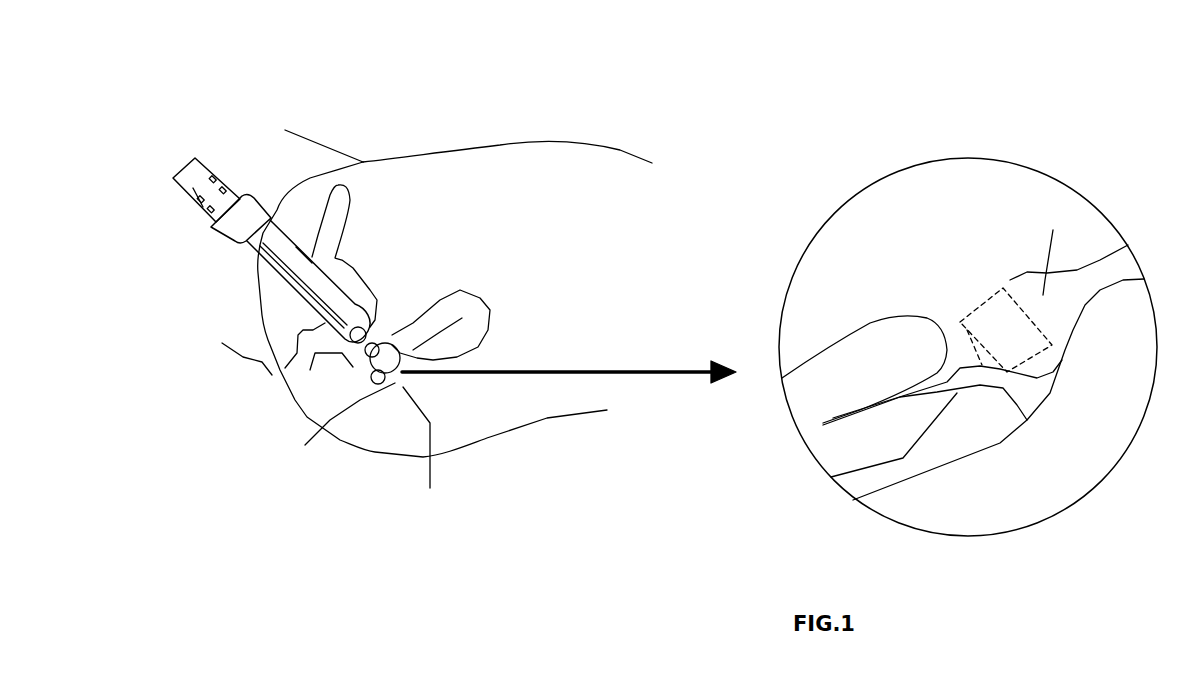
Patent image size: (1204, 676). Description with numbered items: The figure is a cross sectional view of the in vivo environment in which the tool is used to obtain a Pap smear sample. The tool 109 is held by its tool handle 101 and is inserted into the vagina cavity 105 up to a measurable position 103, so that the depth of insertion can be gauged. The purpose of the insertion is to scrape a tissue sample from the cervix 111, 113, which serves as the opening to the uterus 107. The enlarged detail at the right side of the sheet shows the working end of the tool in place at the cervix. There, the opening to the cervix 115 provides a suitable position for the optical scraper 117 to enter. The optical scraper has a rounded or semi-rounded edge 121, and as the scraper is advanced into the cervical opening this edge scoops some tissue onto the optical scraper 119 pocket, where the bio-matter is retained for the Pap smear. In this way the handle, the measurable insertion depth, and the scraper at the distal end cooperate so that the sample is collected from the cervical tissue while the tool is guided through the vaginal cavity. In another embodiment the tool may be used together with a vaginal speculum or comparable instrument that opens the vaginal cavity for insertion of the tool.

The tool handle 101 is at (190, 187).
The measurable position 103 is at (242, 237).
The vagina cavity 105 is at (348, 278).
The uterus 107 is at (460, 290).
The tool 109 is at (285, 368).
The cervix 111 is at (375, 368).
The cervix 113 is at (907, 348).
The opening to the cervix 115 is at (903, 460).
The optical scraper 117 is at (990, 316).
The optical scraper pocket 119 is at (1053, 230).
The rounded or semi-rounded edge 121 is at (1028, 421).